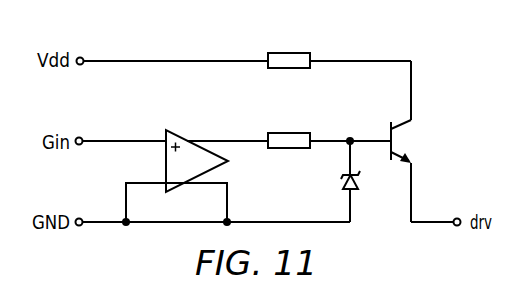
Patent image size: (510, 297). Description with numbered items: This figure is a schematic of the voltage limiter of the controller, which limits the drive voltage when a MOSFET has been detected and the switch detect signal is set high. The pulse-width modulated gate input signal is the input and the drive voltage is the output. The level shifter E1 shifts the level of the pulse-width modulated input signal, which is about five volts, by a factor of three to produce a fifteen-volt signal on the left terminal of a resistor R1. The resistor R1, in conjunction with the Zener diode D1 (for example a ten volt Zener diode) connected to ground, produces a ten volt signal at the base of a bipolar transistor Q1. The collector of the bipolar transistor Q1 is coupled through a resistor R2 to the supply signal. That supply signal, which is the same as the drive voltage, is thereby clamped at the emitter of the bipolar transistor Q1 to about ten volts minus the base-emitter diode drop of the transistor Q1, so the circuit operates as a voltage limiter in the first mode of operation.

The resistor R1 is at (289, 129).
The resistor R2 is at (289, 48).
The bipolar transistor Q1 is at (409, 141).
The Zener diode D1 is at (338, 181).
The level shifter E1 is at (179, 150).